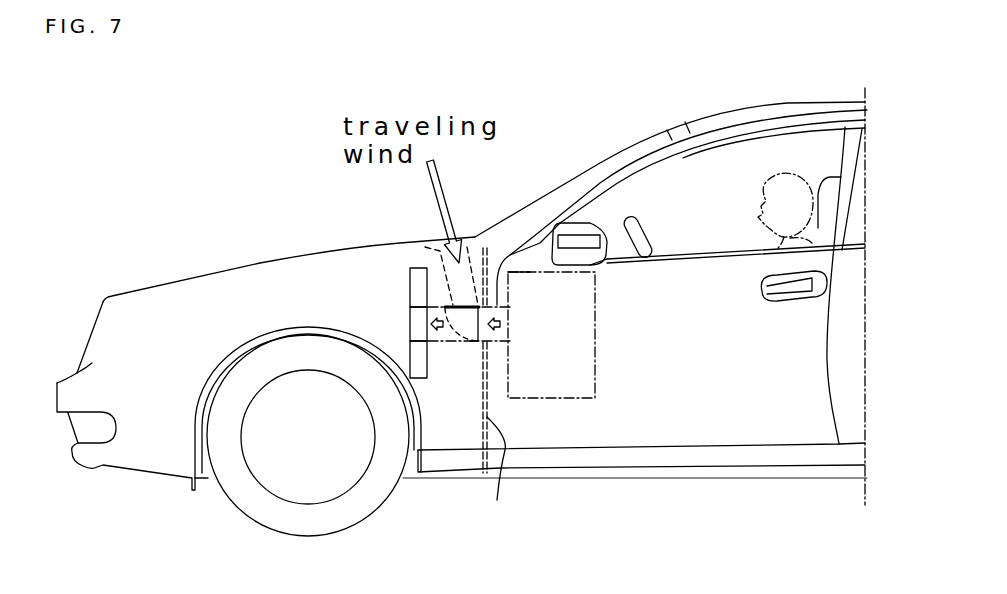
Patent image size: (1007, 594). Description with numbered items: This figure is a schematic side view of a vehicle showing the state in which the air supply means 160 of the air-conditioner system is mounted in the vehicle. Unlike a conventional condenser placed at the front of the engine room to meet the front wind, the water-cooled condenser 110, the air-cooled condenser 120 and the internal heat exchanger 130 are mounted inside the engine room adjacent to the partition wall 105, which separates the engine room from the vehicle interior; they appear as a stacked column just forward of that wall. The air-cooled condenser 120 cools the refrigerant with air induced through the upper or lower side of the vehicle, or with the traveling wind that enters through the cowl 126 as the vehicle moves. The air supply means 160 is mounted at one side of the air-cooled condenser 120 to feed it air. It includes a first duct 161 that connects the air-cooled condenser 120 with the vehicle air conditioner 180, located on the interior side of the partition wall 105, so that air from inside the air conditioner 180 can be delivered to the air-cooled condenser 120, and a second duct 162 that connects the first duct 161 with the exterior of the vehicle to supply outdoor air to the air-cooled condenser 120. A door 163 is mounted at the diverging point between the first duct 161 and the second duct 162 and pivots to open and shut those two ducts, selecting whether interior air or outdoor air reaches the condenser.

The partition wall 105 is at (487, 420).
The water-cooled condenser 110 is at (417, 280).
The air-cooled condenser 120 is at (417, 317).
The internal heat exchanger 130 is at (417, 362).
The cowl 126 is at (424, 247).
The air supply means 160 is at (459, 345).
The first duct 161 is at (513, 271).
The second duct 162 is at (474, 280).
The door 163 is at (458, 310).
The air conditioner 180 is at (547, 271).